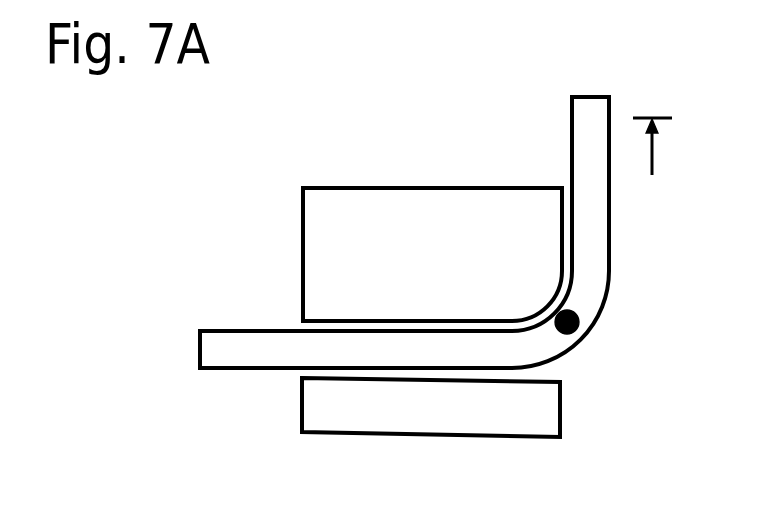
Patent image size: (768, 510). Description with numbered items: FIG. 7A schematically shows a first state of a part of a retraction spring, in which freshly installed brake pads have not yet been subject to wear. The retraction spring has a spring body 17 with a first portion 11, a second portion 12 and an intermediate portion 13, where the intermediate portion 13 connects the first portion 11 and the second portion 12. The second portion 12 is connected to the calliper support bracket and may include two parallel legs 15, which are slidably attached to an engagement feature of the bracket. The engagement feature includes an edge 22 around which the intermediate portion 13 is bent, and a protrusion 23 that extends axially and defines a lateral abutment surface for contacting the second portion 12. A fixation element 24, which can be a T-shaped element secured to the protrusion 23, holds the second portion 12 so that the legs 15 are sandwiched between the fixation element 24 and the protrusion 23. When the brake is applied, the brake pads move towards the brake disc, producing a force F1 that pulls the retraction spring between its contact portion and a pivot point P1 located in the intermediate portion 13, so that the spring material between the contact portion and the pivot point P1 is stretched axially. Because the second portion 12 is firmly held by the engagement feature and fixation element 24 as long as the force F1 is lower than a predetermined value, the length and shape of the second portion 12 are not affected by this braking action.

The first portion 11 is at (577, 127).
The second portion 12 is at (260, 350).
The intermediate portion 13 is at (598, 295).
The legs 15 is at (293, 343).
The spring body 17 is at (598, 113).
The edge 22 is at (540, 302).
The protrusion 23 is at (357, 220).
The fixation element 24 is at (355, 423).
The pivot point P1 is at (583, 327).
The force F1 is at (652, 160).